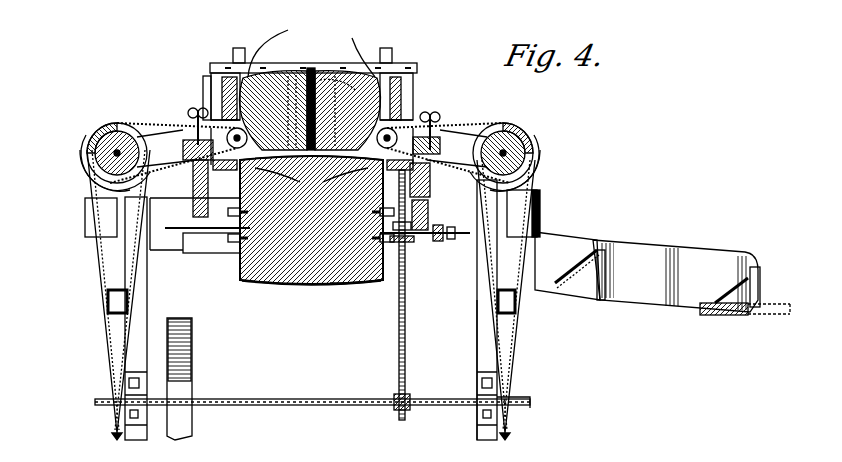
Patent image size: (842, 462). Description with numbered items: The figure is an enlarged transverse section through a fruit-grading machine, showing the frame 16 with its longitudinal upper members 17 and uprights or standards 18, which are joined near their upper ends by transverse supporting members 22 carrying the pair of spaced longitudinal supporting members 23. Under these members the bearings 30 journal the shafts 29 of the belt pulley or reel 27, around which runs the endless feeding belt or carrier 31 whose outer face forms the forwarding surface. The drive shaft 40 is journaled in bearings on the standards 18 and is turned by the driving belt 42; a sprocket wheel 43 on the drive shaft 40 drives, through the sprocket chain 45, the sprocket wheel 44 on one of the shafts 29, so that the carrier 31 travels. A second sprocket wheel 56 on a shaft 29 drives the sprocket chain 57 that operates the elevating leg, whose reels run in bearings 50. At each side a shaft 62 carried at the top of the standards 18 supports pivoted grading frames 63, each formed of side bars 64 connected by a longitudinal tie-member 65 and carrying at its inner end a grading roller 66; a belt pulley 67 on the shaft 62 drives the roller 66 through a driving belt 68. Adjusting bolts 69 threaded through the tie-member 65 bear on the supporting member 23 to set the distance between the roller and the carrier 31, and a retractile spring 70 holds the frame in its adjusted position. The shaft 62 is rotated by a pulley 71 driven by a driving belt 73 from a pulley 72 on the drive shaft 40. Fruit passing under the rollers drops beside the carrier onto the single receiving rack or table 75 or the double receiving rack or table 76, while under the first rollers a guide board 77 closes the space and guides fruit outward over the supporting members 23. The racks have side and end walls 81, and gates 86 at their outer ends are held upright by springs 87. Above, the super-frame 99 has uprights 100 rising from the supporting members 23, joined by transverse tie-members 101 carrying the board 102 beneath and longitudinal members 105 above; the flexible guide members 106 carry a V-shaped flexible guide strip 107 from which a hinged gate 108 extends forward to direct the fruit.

The frame 16 is at (480, 325).
The upper members 17 is at (108, 302).
The uprights or standards 18 is at (135, 350).
The transverse supporting members 22 is at (176, 230).
The longitudinal supporting members 23 is at (193, 200).
The belt pulley or reel 27 is at (300, 285).
The shafts 29 is at (232, 245).
The bearings 30 is at (205, 254).
The endless feeding belt or carrier 31 is at (358, 285).
The drive shaft 40 is at (306, 399).
The driving belt 42 is at (192, 362).
The sprocket wheel 43 is at (402, 412).
The sprocket wheel 44 is at (396, 250).
The sprocket chain 45 is at (386, 295).
The bearings 50 is at (420, 236).
The sprocket wheel 56 is at (452, 245).
The sprocket chain 57 is at (538, 195).
The shaft 62 is at (95, 152).
The grading frames 63 is at (158, 130).
The side bars 64 is at (142, 132).
The longitudinal tie-member 65 is at (440, 137).
The grading roller 66 is at (258, 118).
The belt pulley 67 is at (95, 176).
The driving belt 68 is at (116, 123).
The adjusting bolts 69 is at (197, 108).
The retractile spring 70 is at (313, 171).
The pulley 71 is at (98, 132).
The pulley 72 is at (116, 426).
The driving belt 73 is at (100, 258).
The single receiving rack or table 75 is at (567, 266).
The double receiving rack or table 76 is at (675, 276).
The guide board 77 is at (311, 220).
The side and end walls 81 is at (560, 245).
The movable wall or gate 86 is at (606, 270).
The springs 87 is at (595, 250).
The super-frame 99 is at (415, 75).
The uprights 100 is at (222, 82).
The transverse tie-members 101 is at (272, 64).
The longitudinally-disposed board 102 is at (314, 68).
The longitudinal members 105 is at (238, 48).
The flexible guide members 106 is at (311, 46).
The V-shaped flexible guide strip 107 is at (342, 92).
The gate 108 is at (306, 126).